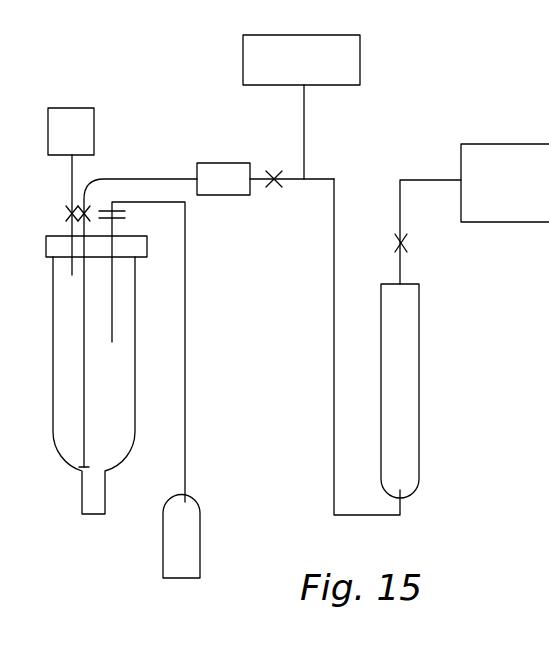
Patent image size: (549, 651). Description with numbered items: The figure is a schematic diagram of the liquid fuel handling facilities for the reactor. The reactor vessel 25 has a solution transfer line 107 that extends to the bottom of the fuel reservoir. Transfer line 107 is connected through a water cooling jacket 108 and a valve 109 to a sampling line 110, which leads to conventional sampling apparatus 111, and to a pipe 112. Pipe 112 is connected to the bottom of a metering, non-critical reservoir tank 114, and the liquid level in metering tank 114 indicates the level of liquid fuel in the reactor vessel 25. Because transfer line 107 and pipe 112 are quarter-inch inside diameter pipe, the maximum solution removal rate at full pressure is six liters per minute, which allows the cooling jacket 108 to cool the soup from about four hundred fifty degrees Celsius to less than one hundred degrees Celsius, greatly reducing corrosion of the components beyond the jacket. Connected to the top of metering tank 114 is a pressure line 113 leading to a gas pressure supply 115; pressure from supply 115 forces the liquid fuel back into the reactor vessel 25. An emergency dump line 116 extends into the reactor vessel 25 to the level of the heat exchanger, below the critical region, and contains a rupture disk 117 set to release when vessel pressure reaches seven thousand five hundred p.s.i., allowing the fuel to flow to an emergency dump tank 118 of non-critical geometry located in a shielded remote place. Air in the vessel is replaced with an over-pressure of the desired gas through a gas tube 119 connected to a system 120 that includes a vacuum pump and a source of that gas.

The reactor vessel 25 is at (135, 352).
The solution transfer line 107 is at (83, 350).
The water cooling jacket 108 is at (205, 163).
The valve 109 is at (275, 188).
The sampling line 110 is at (306, 146).
The sampling apparatus 111 is at (361, 63).
The pipe 112 is at (330, 179).
The pressure line 113 is at (402, 224).
The metering non-critical reservoir tank 114 is at (419, 403).
The gas pressure supply 115 is at (492, 144).
The emergency dump line 116 is at (112, 284).
The rupture disk 117 is at (125, 214).
The emergency dump tank 118 is at (200, 525).
The gas tube 119 is at (72, 185).
The system including vacuum pump and gas source 120 is at (94, 147).